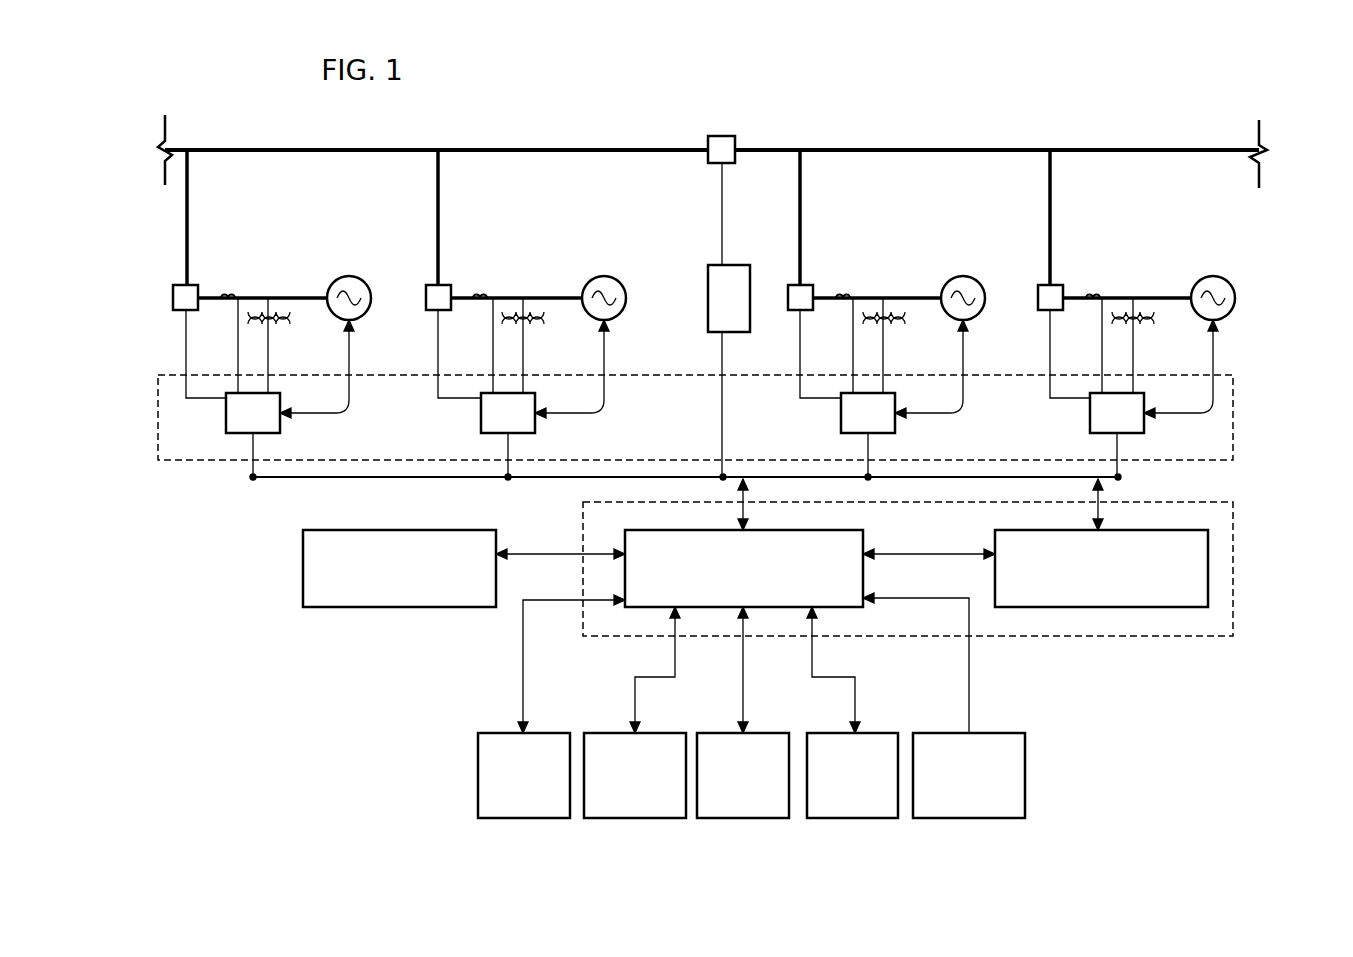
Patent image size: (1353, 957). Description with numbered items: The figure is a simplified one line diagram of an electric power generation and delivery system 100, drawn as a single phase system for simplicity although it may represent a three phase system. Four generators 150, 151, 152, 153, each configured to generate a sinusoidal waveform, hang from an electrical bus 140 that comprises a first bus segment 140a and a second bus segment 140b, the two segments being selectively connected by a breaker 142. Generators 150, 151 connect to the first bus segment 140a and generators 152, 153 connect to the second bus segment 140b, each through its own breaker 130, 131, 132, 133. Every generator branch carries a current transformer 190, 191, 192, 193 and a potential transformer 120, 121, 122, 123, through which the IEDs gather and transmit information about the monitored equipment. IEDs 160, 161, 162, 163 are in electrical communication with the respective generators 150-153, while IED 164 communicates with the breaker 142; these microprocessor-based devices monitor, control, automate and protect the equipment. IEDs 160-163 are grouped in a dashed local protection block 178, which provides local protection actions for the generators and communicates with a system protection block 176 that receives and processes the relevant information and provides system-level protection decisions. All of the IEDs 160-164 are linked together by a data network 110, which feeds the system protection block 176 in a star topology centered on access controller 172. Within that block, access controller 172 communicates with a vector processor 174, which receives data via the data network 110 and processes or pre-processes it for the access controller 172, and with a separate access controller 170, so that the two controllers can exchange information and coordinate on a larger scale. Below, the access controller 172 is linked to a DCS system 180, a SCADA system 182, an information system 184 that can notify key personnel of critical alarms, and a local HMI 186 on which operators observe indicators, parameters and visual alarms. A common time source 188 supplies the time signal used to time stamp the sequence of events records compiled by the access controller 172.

The electric power generation and delivery system 100 is at (540, 103).
The data network 110 is at (500, 480).
The potential transformer 120 is at (292, 320).
The potential transformer 121 is at (545, 320).
The potential transformer 122 is at (907, 320).
The potential transformer 123 is at (1156, 320).
The breaker 130 is at (200, 312).
The breaker 131 is at (452, 312).
The breaker 132 is at (814, 312).
The breaker 133 is at (1064, 312).
The electrical bus 140 is at (842, 138).
The first bus segment 140a is at (345, 149).
The second bus segment 140b is at (1010, 149).
The breaker 142 is at (720, 135).
The generator 150 is at (352, 276).
The generator 151 is at (607, 276).
The generator 152 is at (966, 276).
The generator 153 is at (1216, 276).
The IED 160 is at (226, 410).
The IED 161 is at (481, 410).
The IED 162 is at (841, 410).
The IED 163 is at (1090, 410).
The IED 164 is at (707, 290).
The access controller 170 is at (383, 605).
The access controller 172 is at (727, 592).
The vector processor 174 is at (1084, 592).
The system protection block 176 is at (1234, 569).
The local protection block 178 is at (1234, 424).
The DCS system 180 is at (523, 820).
The SCADA system 182 is at (635, 820).
The information system 184 is at (743, 820).
The local HMI 186 is at (855, 820).
The common time source 188 is at (965, 820).
The current transformer 190 is at (230, 292).
The current transformer 191 is at (482, 292).
The current transformer 192 is at (845, 292).
The current transformer 193 is at (1095, 292).